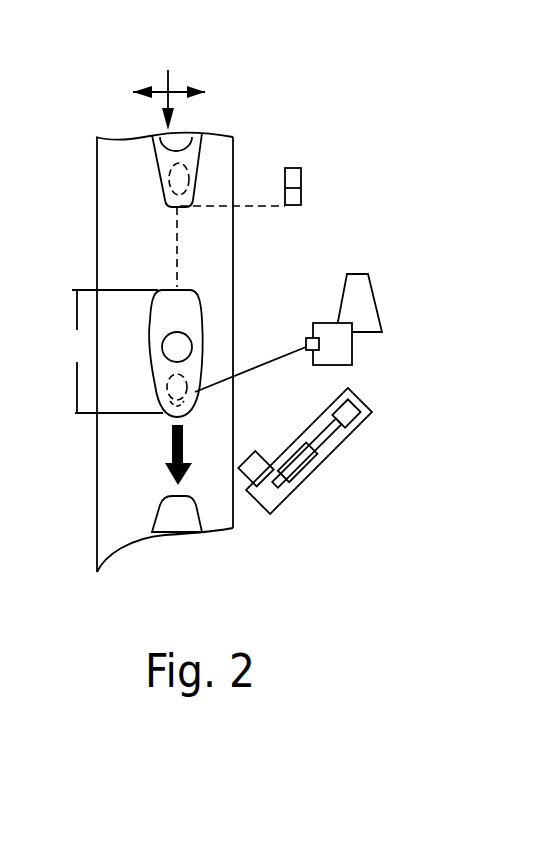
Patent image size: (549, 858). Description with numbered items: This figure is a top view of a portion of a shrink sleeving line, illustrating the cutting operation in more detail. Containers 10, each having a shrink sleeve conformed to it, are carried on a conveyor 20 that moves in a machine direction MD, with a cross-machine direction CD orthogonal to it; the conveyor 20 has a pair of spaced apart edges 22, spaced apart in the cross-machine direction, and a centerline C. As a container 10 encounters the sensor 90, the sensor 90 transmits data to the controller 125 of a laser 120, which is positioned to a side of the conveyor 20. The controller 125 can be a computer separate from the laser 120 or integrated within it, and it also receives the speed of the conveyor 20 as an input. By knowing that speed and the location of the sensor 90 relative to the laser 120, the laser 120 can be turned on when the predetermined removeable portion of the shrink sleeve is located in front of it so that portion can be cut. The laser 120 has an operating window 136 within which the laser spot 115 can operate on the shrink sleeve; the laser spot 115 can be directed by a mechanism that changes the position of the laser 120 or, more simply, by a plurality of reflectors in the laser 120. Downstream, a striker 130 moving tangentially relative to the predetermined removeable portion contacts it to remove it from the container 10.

The container 10 is at (170, 188).
The conveyor 20 is at (117, 272).
The edges 22 is at (97, 222).
The sensor 90 is at (303, 194).
The laser spot 115 is at (196, 394).
The laser 120 is at (310, 338).
The controller 125 is at (362, 305).
The striker 130 is at (245, 478).
The operating window 136 is at (105, 351).
The centerline C is at (177, 258).
The cross-machine direction CD is at (170, 88).
The machine direction MD is at (172, 98).